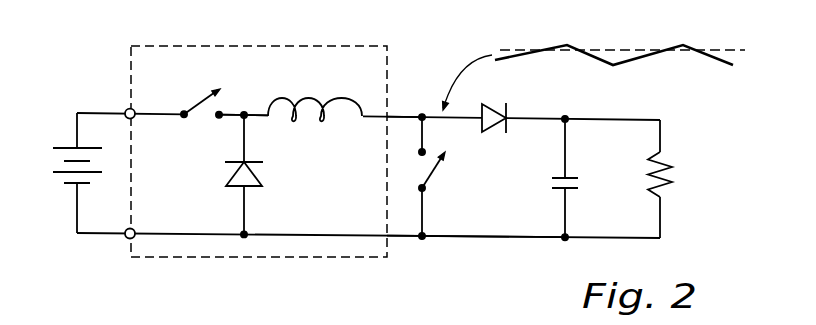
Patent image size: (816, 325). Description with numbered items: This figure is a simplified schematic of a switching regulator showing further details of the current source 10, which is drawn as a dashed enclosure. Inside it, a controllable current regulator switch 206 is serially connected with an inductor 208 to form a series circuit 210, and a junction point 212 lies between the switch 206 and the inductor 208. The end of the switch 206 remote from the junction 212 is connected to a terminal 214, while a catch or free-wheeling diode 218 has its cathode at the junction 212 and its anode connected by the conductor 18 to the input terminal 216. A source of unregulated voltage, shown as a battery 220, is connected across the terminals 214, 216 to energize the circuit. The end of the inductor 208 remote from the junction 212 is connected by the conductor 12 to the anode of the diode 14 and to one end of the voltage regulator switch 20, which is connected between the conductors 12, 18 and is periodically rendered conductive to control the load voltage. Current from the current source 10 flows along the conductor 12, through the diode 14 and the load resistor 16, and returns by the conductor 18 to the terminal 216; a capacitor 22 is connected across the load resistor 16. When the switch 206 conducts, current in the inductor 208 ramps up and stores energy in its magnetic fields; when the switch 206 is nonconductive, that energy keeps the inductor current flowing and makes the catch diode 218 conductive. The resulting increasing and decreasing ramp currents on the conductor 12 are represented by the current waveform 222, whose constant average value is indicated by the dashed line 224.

The current source 10 is at (152, 45).
The battery 220 is at (53, 162).
The terminal 214 is at (134, 117).
The input terminal 216 is at (136, 231).
The controllable current regulator switch 206 is at (203, 103).
The series circuit 210 is at (266, 80).
The junction point 212 is at (243, 117).
The catch diode 218 is at (228, 173).
The inductor 208 is at (317, 98).
The conductor 12 is at (406, 119).
The voltage regulator switch 20 is at (433, 168).
The conductor 18 is at (402, 237).
The diode 14 is at (483, 122).
The capacitor 22 is at (578, 186).
The load resistor 16 is at (672, 188).
The current waveform 222 is at (570, 47).
The dashed line 224 is at (735, 52).